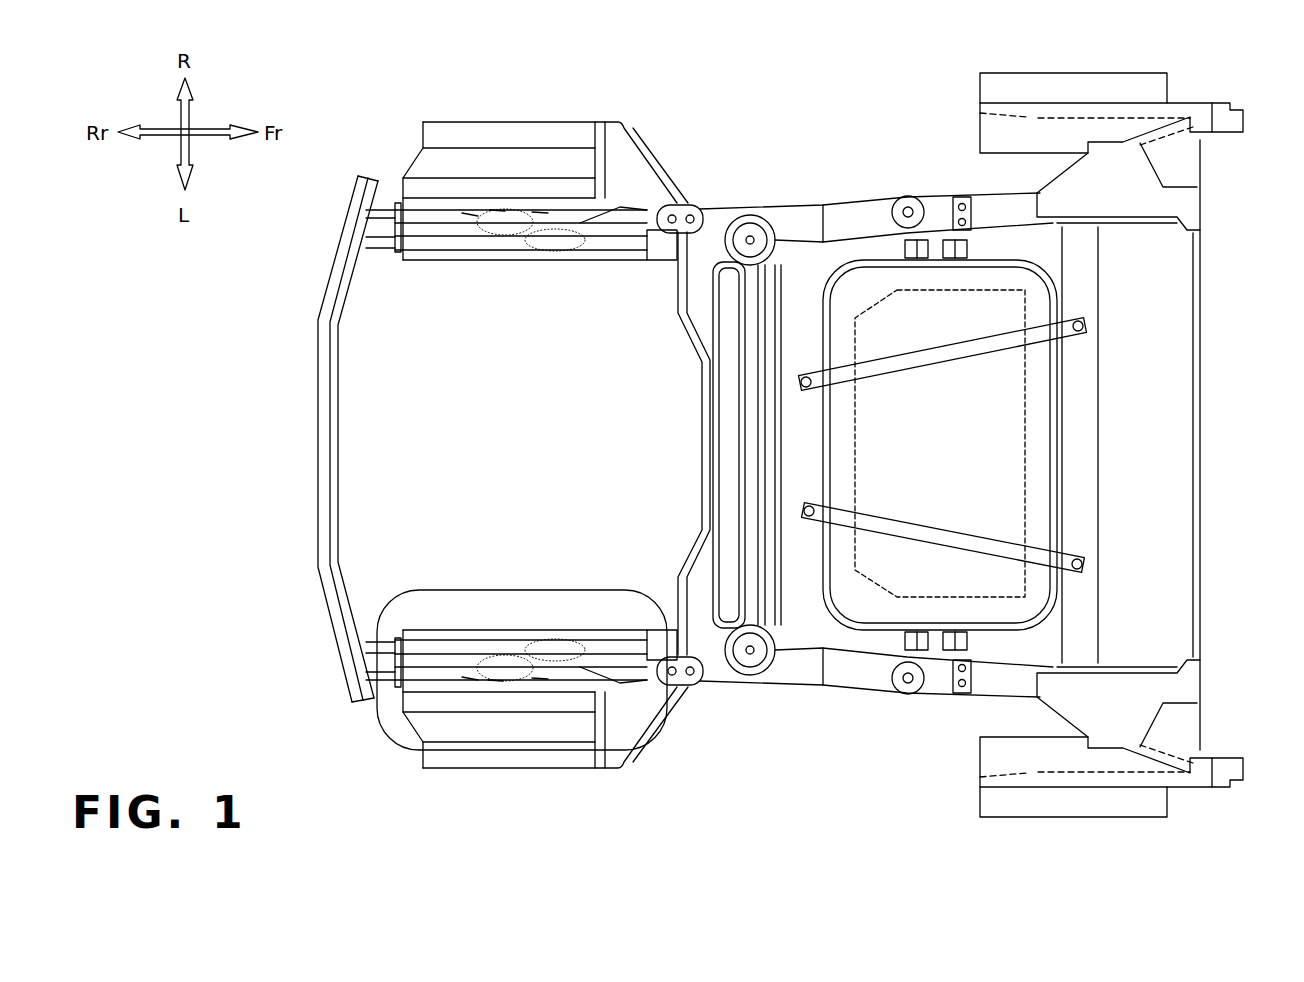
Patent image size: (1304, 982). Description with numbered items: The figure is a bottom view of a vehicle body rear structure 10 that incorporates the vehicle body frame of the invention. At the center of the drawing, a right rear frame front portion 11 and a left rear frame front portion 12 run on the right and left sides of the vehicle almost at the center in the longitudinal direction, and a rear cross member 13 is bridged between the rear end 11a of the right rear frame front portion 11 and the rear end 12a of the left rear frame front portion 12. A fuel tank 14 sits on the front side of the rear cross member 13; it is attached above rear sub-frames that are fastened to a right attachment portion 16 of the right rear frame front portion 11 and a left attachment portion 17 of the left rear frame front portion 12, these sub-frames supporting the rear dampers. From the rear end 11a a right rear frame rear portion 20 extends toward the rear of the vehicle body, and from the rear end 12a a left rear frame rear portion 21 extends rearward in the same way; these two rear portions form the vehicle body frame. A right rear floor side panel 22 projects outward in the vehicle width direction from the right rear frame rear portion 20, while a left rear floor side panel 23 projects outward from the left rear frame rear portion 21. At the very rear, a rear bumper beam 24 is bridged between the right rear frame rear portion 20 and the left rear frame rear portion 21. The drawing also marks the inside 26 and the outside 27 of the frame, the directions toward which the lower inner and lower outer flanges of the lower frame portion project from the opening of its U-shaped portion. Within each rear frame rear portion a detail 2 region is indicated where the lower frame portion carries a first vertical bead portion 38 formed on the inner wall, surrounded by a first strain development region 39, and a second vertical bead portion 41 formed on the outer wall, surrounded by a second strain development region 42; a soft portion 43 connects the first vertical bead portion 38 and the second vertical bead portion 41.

The vehicle body rear structure 10 is at (400, 95).
The silencer unit 2 is at (400, 600).
The right rear frame front portion 11 is at (857, 196).
The rear end of the right rear frame front portion 11a is at (660, 250).
The left rear frame front portion 12 is at (850, 675).
The rear end of the left rear frame front portion 12a is at (665, 630).
The rear cross member 13 is at (725, 430).
The fuel tank 14 is at (1005, 437).
The right attachment portion 16 is at (672, 206).
The left attachment portion 17 is at (680, 670).
The right rear frame rear portion 20 is at (450, 243).
The left rear frame rear portion 21 is at (450, 648).
The right rear floor side panel 22 is at (530, 135).
The left rear floor side panel 23 is at (520, 770).
The rear bumper beam 24 is at (318, 425).
The inside 26 is at (538, 513).
The outside 27 is at (464, 838).
The first vertical bead portion 38 is at (556, 245).
The first strain development region 39 is at (598, 222).
The second vertical bead portion 41 is at (497, 208).
The second strain development region 42 is at (470, 215).
The soft portion 43 is at (540, 210).